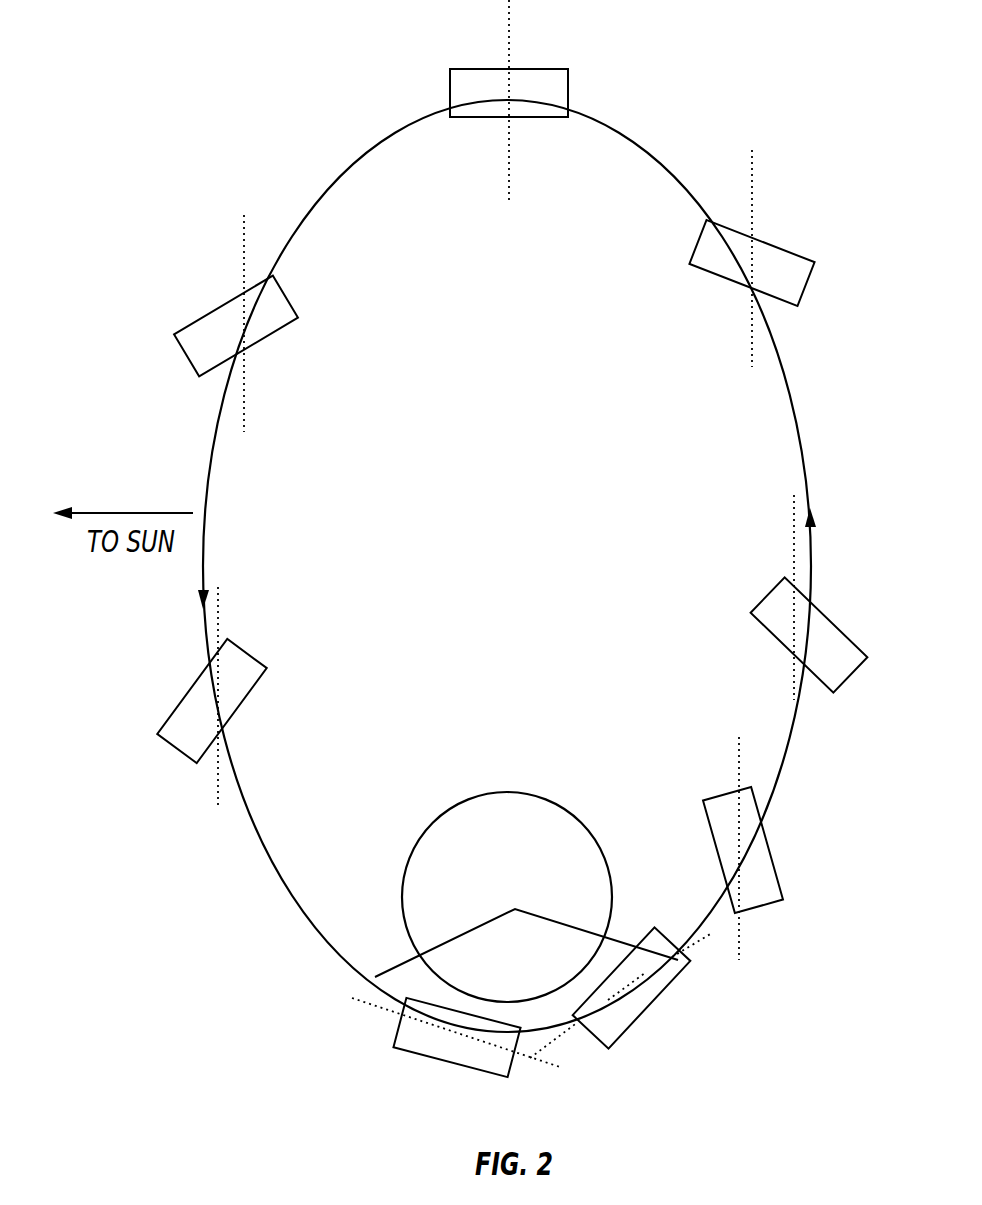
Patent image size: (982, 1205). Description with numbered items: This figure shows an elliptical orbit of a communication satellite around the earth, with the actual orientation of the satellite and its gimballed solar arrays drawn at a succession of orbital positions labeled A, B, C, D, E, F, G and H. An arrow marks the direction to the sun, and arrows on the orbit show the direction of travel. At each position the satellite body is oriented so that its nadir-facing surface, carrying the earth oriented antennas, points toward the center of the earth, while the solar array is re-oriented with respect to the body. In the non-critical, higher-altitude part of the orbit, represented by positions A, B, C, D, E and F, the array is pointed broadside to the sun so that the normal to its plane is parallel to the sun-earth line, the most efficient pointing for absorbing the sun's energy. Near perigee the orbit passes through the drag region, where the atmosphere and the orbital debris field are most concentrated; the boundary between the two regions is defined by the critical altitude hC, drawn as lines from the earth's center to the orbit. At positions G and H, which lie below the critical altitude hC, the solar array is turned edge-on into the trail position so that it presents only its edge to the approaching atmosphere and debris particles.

The satellite at orbital position A is at (762, 848).
The satellite at orbital position B is at (822, 597).
The satellite at orbital position C is at (776, 258).
The satellite at orbital position D is at (560, 100).
The satellite at orbital position E is at (258, 323).
The satellite at orbital position F is at (233, 697).
The satellite at orbital position G is at (465, 1040).
The satellite at orbital position H is at (642, 987).
The critical altitude hC is at (520, 942).